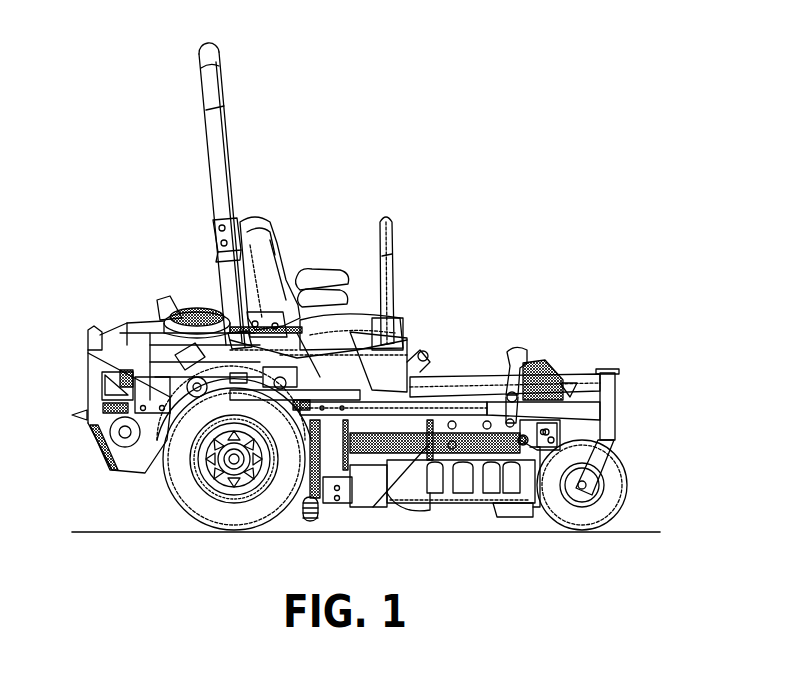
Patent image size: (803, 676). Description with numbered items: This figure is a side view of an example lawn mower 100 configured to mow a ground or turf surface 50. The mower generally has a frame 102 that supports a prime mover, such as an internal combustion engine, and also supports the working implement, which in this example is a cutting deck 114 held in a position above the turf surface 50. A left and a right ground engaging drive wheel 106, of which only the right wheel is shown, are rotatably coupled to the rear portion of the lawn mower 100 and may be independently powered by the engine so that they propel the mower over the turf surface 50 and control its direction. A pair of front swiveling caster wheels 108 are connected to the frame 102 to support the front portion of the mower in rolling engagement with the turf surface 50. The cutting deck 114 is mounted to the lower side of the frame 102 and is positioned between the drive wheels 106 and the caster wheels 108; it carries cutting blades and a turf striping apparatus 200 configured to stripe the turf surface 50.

The turf surface 50 is at (640, 531).
The lawn mower 100 is at (116, 266).
The frame 102 is at (441, 380).
The ground engaging drive wheel 106 is at (180, 468).
The front swiveling caster wheel 108 is at (615, 478).
The cutting deck 114 is at (381, 473).
The turf striping apparatus 200 is at (308, 521).